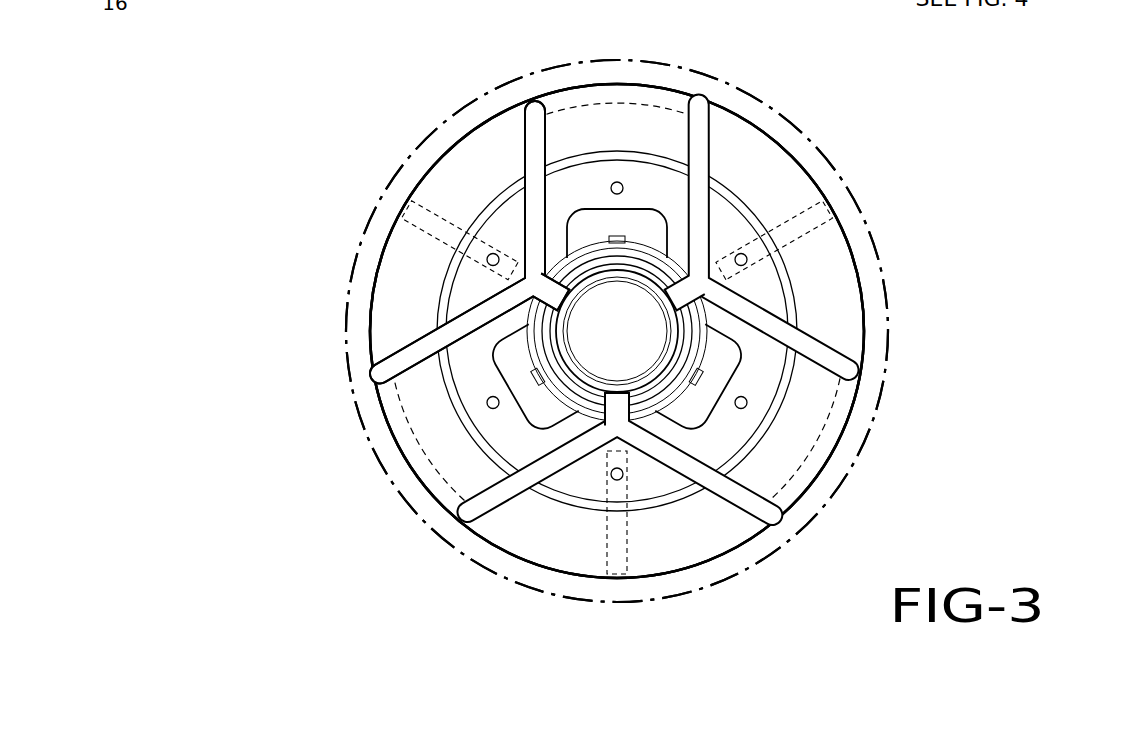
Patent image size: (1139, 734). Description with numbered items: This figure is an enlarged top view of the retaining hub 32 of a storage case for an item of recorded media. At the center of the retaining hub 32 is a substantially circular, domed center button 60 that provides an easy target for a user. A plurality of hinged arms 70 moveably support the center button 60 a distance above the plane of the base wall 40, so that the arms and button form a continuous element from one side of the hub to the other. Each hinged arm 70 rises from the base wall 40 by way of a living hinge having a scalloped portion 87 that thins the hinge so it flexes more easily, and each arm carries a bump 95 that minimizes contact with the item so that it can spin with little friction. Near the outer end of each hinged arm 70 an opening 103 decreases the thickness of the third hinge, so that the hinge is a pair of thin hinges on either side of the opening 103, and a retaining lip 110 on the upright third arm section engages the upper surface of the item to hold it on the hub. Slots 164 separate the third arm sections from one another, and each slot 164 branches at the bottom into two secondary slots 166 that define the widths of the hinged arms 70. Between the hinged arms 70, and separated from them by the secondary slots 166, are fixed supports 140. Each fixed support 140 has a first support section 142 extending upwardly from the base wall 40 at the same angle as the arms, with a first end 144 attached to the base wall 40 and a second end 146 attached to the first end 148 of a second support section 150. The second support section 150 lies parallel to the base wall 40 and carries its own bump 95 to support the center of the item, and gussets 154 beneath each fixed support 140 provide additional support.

The retaining hub 32 is at (887, 120).
The base wall 40 is at (878, 312).
The center button 60 is at (650, 355).
The hinged arms 70 is at (595, 117).
The scalloped portion 87 is at (561, 103).
The bump 95 is at (617, 182).
The opening 103 is at (640, 120).
The retaining lip 110 is at (518, 230).
The fixed supports 140 is at (477, 147).
The first support section 142 is at (733, 155).
The first end 144 is at (728, 108).
The second end 146 is at (740, 192).
The first end 148 is at (460, 290).
The second support section 150 is at (503, 233).
The gussets 154 is at (393, 190).
The slots 164 is at (530, 295).
The secondary slots 166 is at (597, 212).